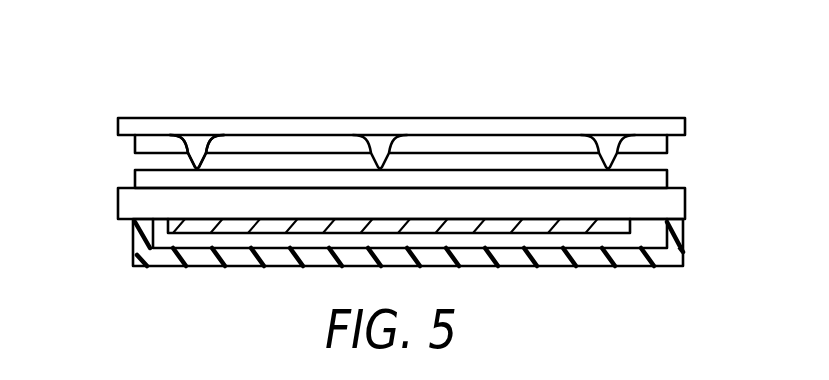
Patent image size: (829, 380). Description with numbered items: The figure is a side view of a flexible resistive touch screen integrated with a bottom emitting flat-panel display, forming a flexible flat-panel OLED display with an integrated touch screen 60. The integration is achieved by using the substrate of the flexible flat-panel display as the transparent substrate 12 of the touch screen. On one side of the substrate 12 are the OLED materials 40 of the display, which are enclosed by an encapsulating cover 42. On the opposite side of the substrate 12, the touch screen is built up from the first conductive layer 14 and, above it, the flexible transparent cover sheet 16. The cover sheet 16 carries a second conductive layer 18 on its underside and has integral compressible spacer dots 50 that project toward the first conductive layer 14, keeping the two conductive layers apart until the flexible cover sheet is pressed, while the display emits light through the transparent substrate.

The flexible flat-panel OLED display with an integrated touch screen 60 is at (562, 88).
The flexible transparent cover sheet 16 is at (117, 127).
The second conductive layer 18 is at (667, 145).
The integral compressible spacer dots 50 is at (198, 145).
The first conductive layer 14 is at (668, 175).
The transparent substrate 12 is at (118, 200).
The OLED materials 40 is at (632, 227).
The encapsulating cover 42 is at (135, 252).